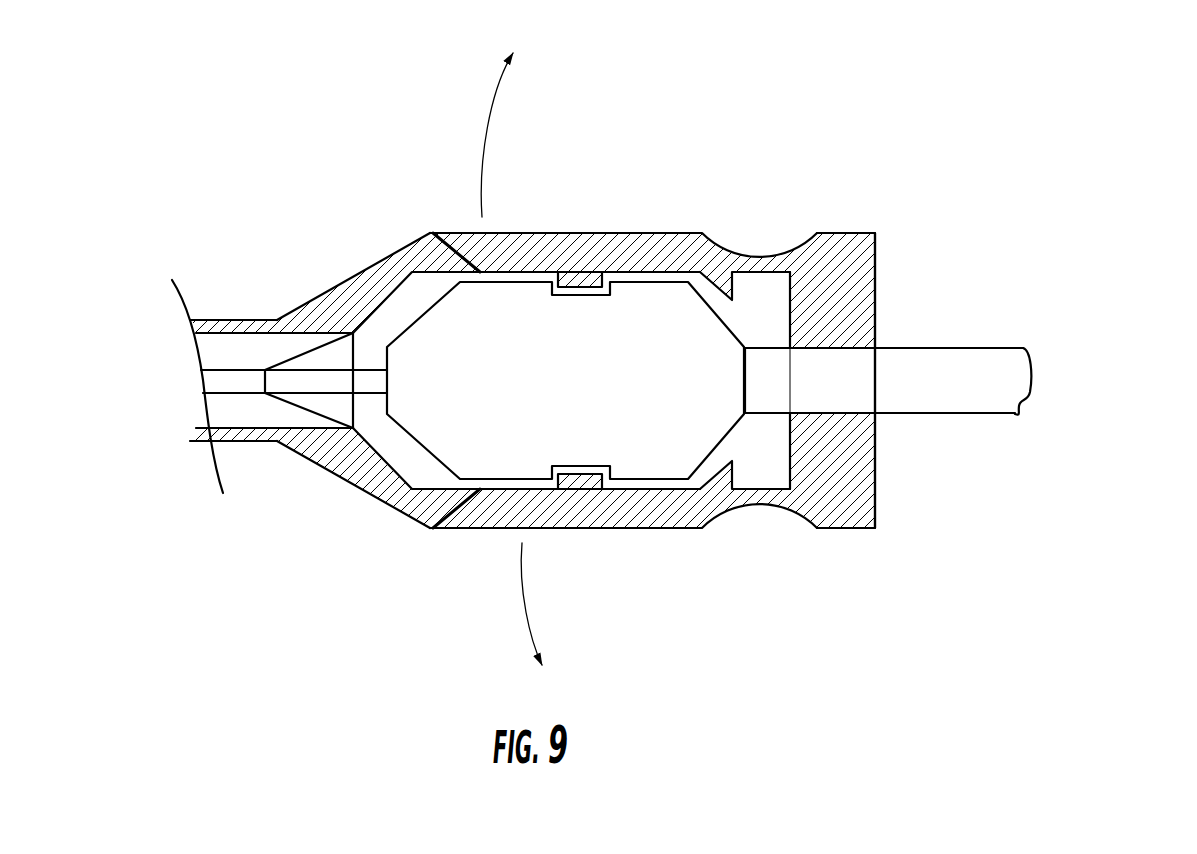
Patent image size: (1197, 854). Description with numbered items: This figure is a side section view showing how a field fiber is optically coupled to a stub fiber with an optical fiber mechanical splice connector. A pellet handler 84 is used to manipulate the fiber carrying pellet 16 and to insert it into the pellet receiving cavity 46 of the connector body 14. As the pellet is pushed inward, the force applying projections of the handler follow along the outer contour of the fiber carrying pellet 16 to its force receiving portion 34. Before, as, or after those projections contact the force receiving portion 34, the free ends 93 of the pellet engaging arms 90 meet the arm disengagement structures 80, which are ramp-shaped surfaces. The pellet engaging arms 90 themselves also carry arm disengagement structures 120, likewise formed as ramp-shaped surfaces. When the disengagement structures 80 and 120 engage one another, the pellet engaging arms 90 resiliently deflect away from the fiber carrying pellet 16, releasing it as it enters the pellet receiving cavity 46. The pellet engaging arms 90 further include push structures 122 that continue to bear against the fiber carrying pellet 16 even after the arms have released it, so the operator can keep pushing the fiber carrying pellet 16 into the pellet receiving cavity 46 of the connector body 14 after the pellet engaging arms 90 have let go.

The connector body 14 is at (283, 298).
The fiber carrying pellet 16 is at (518, 277).
The force receiving portion 34 is at (765, 320).
The pellet receiving cavity 46 is at (370, 453).
The arm disengagement structures 80 is at (432, 233).
The pellet handler 84 is at (658, 380).
The pellet engaging arms 90 is at (660, 233).
The free ends 93 is at (432, 235).
The arm disengagement structures 120 is at (460, 233).
The push structures 122 is at (722, 282).